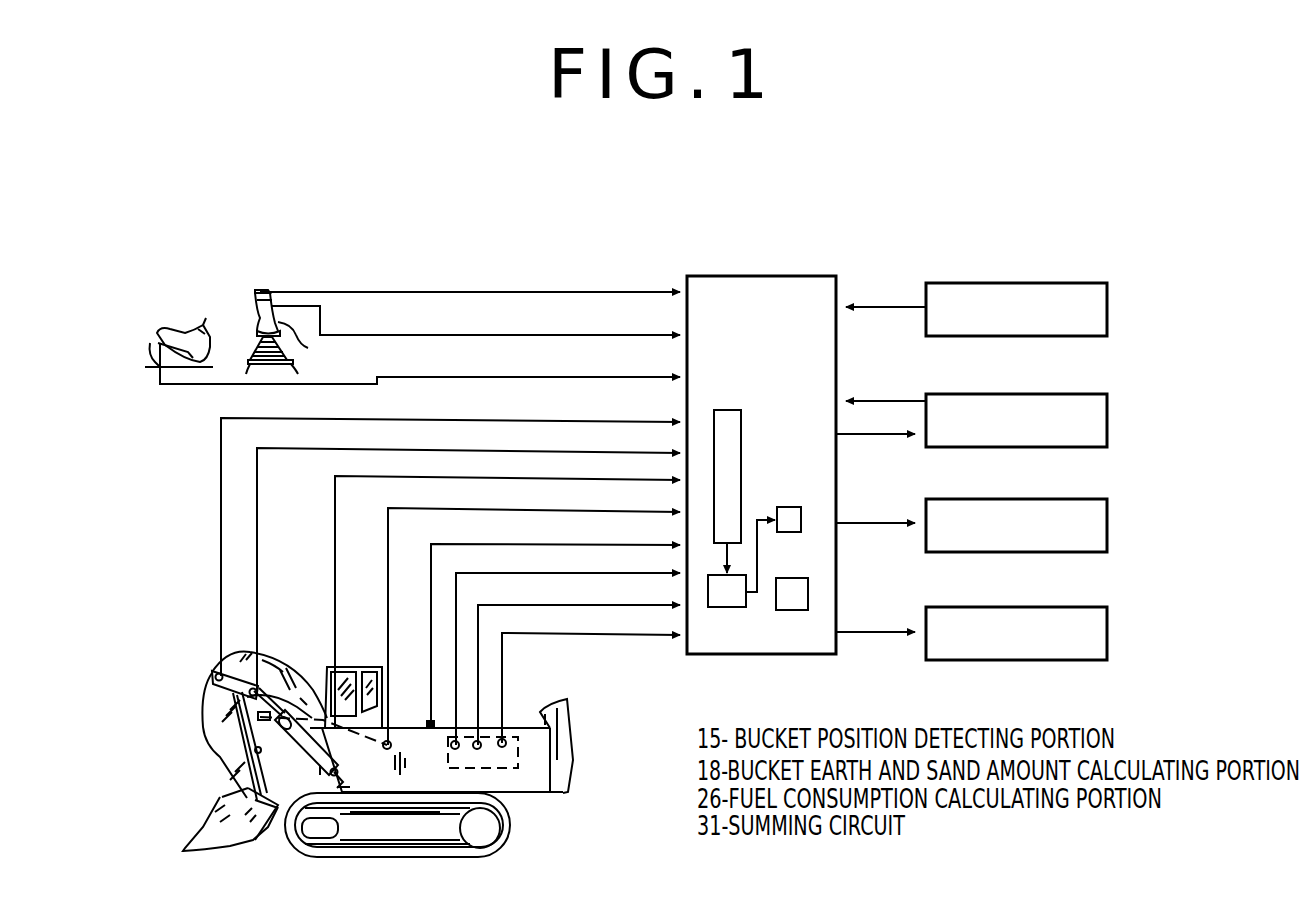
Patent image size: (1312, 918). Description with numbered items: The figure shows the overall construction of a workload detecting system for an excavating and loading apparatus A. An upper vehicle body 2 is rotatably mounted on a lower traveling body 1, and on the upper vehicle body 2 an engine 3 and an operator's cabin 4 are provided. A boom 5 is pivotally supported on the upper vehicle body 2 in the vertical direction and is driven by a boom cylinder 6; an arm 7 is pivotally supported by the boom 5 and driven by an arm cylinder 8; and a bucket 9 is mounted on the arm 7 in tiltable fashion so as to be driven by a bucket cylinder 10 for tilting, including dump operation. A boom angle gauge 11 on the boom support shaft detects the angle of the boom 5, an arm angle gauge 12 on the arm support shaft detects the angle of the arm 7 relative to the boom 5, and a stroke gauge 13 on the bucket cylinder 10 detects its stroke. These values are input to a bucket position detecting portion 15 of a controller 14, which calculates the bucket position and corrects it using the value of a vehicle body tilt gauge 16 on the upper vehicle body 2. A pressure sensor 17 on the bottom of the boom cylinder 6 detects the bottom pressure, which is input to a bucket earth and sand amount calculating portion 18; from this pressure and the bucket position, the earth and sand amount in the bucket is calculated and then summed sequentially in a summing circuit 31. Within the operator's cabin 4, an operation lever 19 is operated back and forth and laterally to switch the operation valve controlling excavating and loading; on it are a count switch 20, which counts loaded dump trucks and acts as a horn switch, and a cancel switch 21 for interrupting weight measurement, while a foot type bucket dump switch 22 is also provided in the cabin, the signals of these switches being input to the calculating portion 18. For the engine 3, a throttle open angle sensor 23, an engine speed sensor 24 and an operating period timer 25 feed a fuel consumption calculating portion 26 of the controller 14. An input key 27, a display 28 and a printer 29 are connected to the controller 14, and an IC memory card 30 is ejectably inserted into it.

The lower traveling body 1 is at (512, 830).
The upper vehicle body 2 is at (337, 787).
The engine 3 is at (566, 792).
The operator's cabin 4 is at (358, 667).
The boom 5 is at (280, 673).
The boom cylinder 6 is at (303, 752).
The arm 7 is at (205, 703).
The arm cylinder 8 is at (300, 683).
The bucket 9 is at (220, 822).
The bucket cylinder 10 is at (250, 730).
The boom angle gauge 11 is at (388, 742).
The arm angle gauge 12 is at (218, 673).
The stroke gauge 13 is at (255, 750).
The controller 14 is at (774, 290).
The bucket position detecting portion 15 is at (730, 422).
The vehicle body tilt gauge 16 is at (431, 721).
The pressure sensor 17 is at (340, 768).
The bucket earth and sand amount calculating portion 18 is at (728, 610).
The operation lever 19 is at (311, 345).
The count switch 20 is at (262, 291).
The cancel switch 21 is at (257, 307).
The foot type bucket dump switch 22 is at (160, 345).
The throttle open angle sensor 23 is at (503, 740).
The engine speed sensor 24 is at (478, 749).
The operating period timer 25 is at (452, 748).
The fuel consumption calculating portion 26 is at (800, 602).
The input key 27 is at (1032, 283).
The display 28 is at (1030, 394).
The printer 29 is at (1030, 499).
The IC memory card 30 is at (1030, 607).
The summing circuit 31 is at (795, 510).
The excavating and loading apparatus A is at (583, 733).